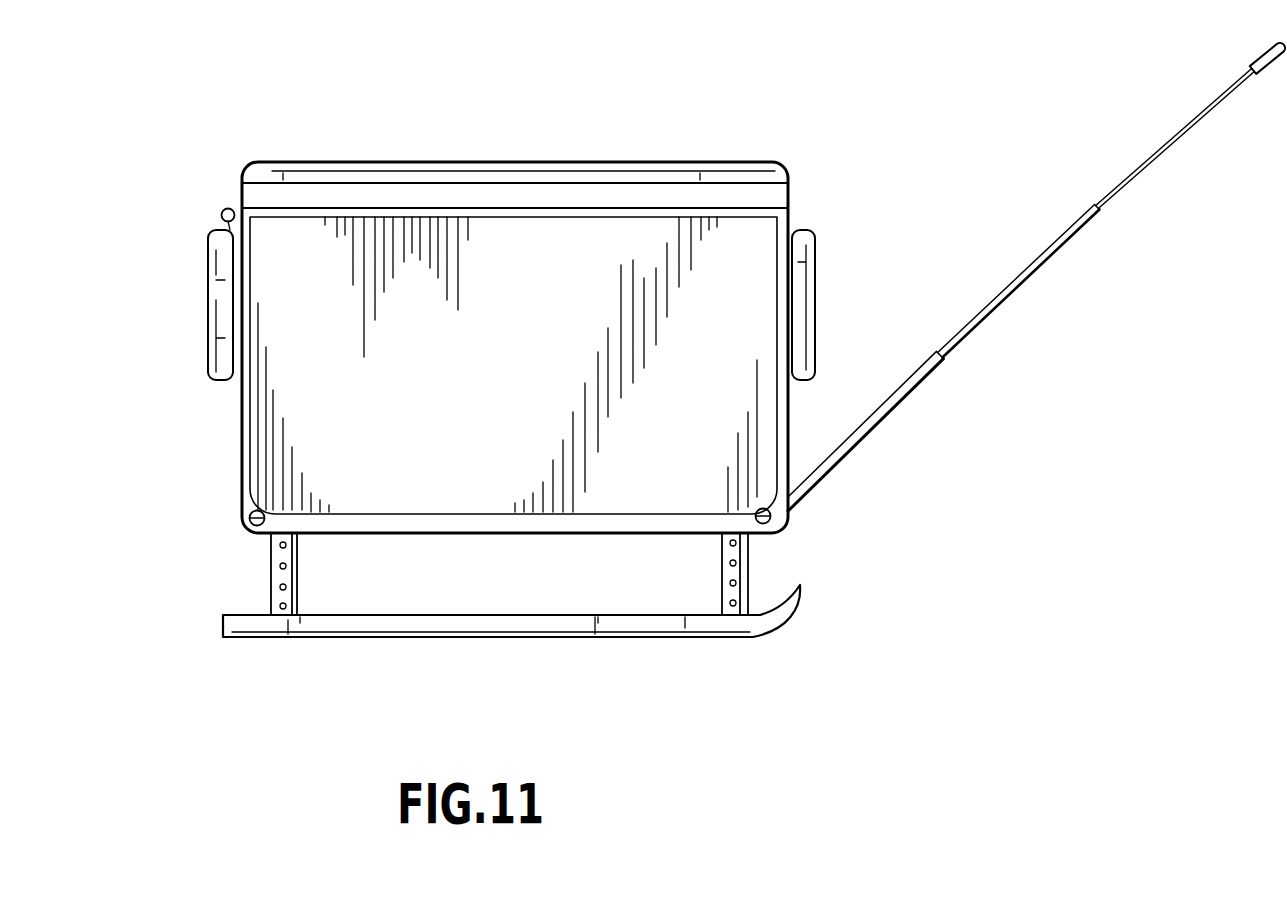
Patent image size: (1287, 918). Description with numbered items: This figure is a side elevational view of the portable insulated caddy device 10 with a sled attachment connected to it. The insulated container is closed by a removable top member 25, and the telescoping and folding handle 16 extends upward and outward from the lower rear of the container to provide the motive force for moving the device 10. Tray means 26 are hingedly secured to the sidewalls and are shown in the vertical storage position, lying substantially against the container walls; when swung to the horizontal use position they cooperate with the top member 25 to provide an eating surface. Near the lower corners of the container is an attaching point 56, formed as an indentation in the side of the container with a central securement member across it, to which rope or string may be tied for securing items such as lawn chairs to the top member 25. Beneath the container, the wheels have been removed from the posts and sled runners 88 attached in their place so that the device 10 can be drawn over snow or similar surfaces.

The portable insulated caddy device 10 is at (198, 315).
The telescoping and folding handle 16 is at (1030, 278).
The removable top member 25 is at (547, 162).
The tray means 26 is at (815, 272).
The attaching point 56 is at (768, 524).
The sled runner 88 is at (593, 637).